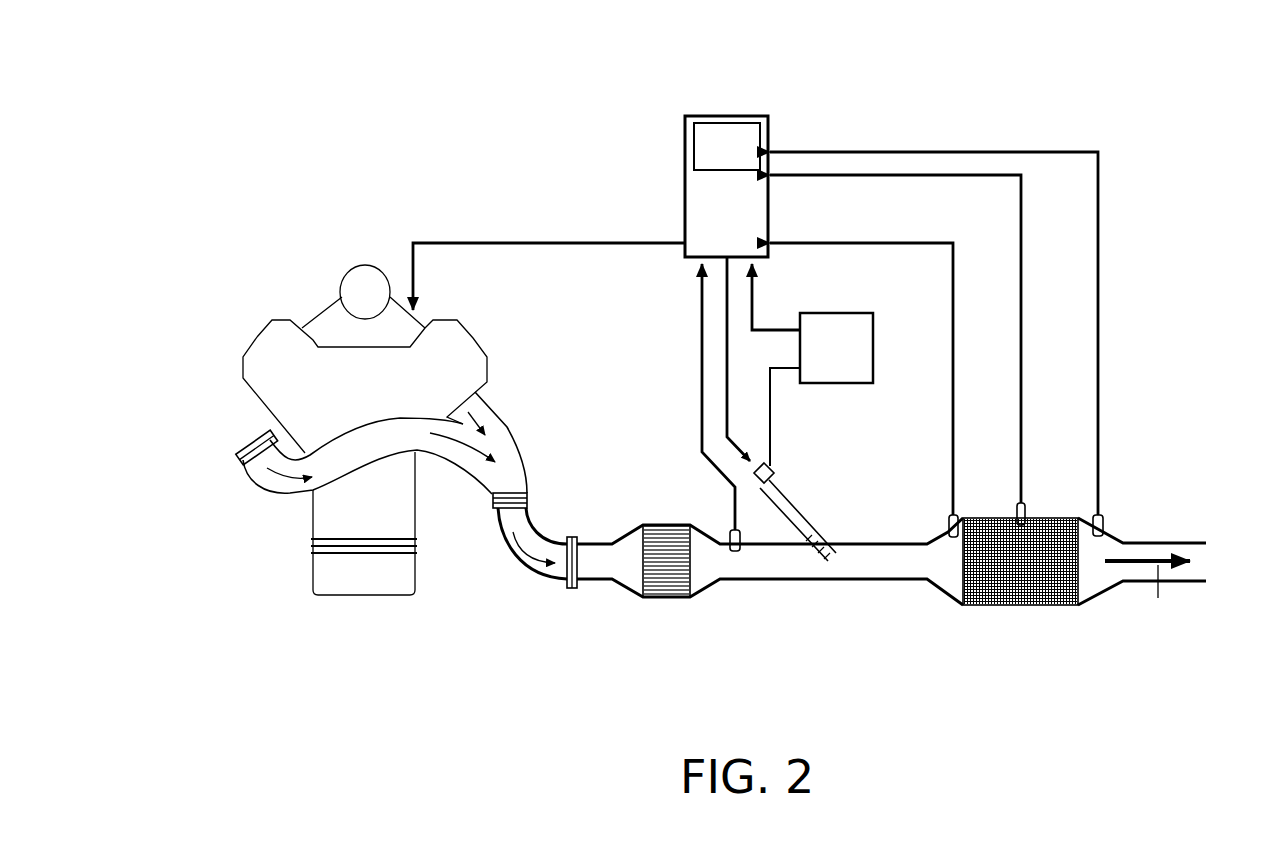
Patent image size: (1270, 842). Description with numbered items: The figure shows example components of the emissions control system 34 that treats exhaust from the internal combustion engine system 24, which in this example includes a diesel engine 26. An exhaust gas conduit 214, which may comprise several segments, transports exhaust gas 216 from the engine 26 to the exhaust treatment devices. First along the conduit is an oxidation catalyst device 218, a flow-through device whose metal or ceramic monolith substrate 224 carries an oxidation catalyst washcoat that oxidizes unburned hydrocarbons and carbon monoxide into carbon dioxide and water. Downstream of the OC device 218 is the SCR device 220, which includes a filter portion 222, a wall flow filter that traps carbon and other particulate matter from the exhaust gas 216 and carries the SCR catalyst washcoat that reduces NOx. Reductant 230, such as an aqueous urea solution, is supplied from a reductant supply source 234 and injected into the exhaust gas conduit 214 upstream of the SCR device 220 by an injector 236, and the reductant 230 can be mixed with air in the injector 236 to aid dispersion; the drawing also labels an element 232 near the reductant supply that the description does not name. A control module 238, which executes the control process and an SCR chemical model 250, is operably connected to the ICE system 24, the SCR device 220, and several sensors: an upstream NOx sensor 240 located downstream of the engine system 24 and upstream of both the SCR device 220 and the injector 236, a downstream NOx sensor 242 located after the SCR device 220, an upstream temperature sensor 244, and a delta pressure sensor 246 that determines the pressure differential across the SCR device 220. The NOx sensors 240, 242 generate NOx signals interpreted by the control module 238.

The internal combustion engine system 24 is at (404, 156).
The diesel engine 26 is at (320, 290).
The emissions control system 34 is at (765, 608).
The exhaust gas conduit 214 is at (500, 420).
The exhaust gas 216 is at (517, 563).
The oxidation catalyst device 218 is at (654, 604).
The SCR device 220 is at (1045, 612).
The filter portion 222 is at (1015, 583).
The monolith substrate 224 is at (660, 537).
The reductant 230 is at (867, 612).
The reductant supply 232 is at (845, 416).
The reductant supply source 234 is at (873, 343).
The injector 236 is at (813, 535).
The control module 238 is at (685, 198).
The upstream NOx sensor 240 is at (728, 533).
The downstream NOx sensor 242 is at (1104, 530).
The upstream temperature sensor 244 is at (947, 530).
The delta pressure sensor 246 is at (1027, 522).
The SCR chemical model 250 is at (727, 146).